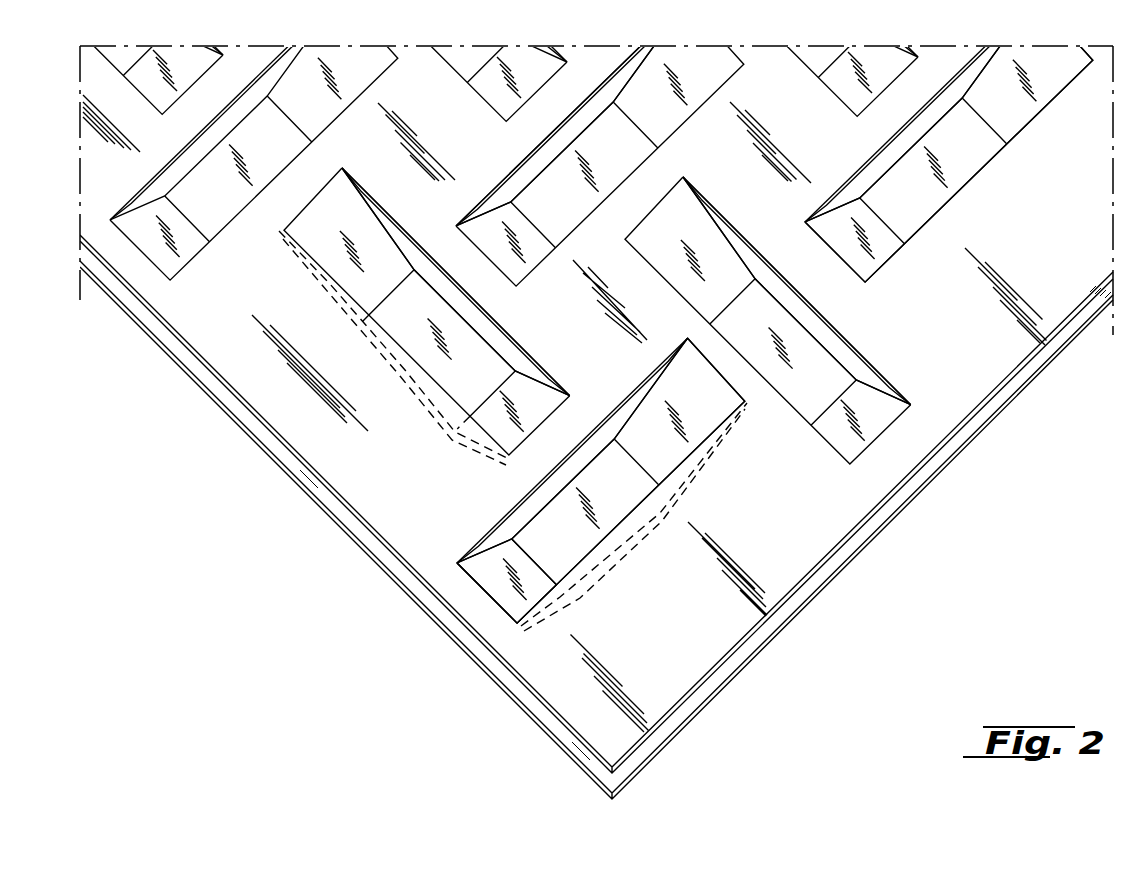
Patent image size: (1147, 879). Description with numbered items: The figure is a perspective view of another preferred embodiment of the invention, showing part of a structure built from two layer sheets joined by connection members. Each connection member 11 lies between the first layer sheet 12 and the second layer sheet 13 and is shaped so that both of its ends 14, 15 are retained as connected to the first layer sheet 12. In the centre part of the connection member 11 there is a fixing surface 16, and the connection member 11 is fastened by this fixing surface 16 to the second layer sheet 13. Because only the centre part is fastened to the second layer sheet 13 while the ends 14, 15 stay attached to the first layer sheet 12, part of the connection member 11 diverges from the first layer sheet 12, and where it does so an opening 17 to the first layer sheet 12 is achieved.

The connection member 11 is at (540, 585).
The first layer sheet 12 is at (988, 410).
The second layer sheet 13 is at (930, 490).
The end of the connection member 14 is at (493, 593).
The end of the connection member 15 is at (709, 373).
The fixing surface 16 is at (972, 160).
The opening 17 is at (527, 172).